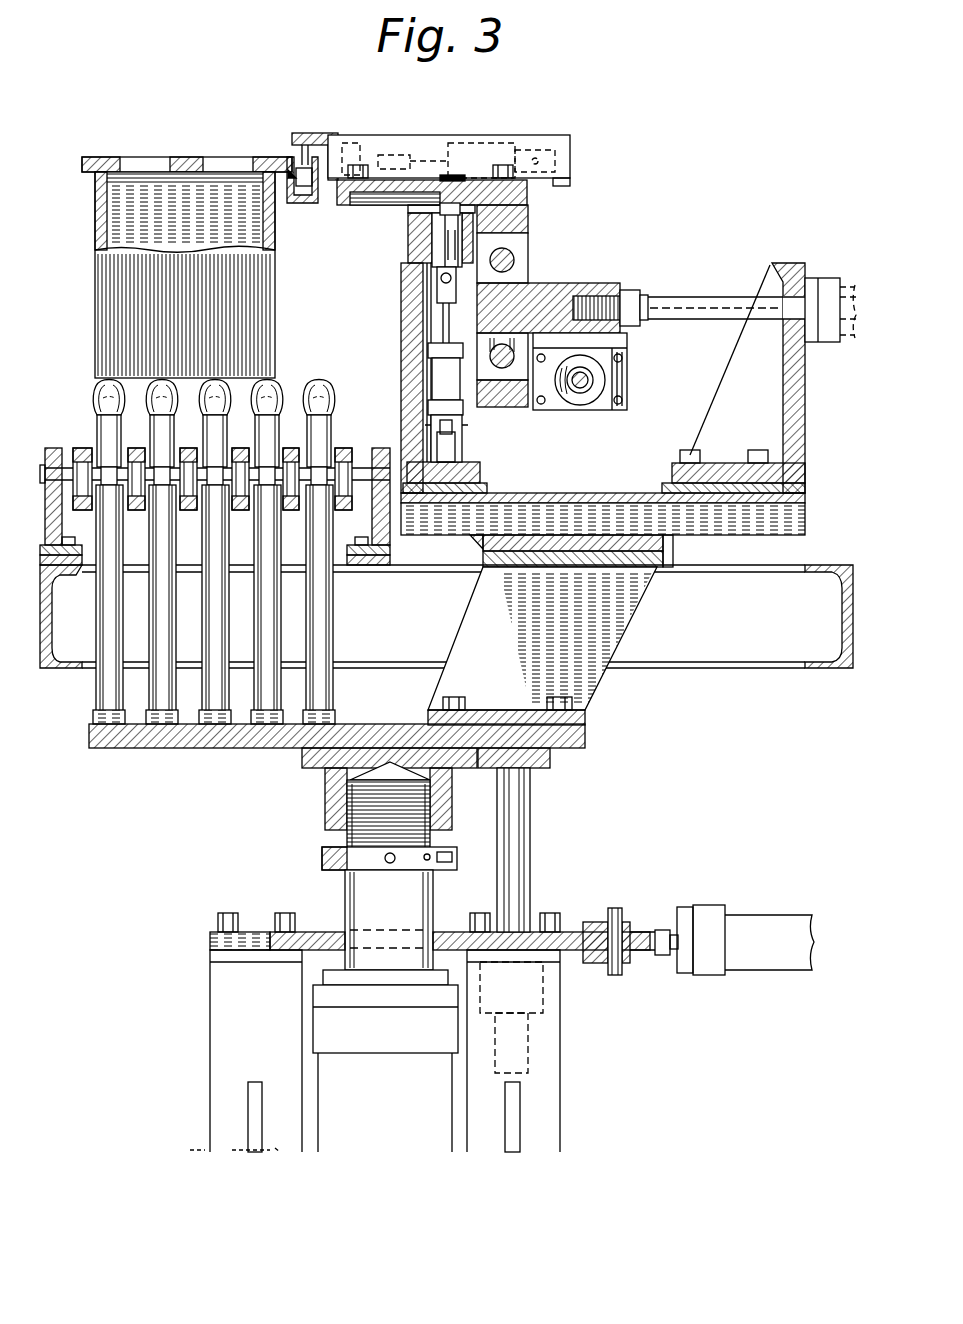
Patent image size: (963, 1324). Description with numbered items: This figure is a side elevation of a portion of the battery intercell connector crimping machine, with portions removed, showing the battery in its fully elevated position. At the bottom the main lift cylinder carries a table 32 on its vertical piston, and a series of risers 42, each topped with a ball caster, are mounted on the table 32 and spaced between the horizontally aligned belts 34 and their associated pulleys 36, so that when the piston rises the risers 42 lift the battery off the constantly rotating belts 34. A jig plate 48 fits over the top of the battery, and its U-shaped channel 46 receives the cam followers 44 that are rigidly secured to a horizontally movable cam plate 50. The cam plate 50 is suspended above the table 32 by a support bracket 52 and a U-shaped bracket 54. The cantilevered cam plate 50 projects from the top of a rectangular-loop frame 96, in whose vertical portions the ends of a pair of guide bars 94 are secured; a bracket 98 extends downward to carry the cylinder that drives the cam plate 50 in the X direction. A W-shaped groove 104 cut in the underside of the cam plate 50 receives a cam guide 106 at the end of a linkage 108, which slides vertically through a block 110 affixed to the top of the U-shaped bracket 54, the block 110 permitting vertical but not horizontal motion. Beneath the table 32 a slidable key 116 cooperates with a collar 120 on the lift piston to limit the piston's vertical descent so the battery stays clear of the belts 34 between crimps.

The table 32 is at (196, 749).
The belts 34 is at (85, 450).
The pulleys 36 is at (358, 460).
The risers 42 is at (278, 386).
The cam followers 44 is at (290, 150).
The U-shaped channel 46 is at (300, 204).
The jig plate 48 is at (200, 170).
The cam plate 50 is at (338, 205).
The support bracket 52 is at (592, 682).
The U-shaped bracket 54 is at (401, 390).
The guide bars 94 is at (512, 259).
The frame 96 is at (527, 218).
The bracket 98 is at (622, 392).
The groove 104 is at (393, 203).
The cam guide 106 is at (440, 213).
The linkage 108 is at (432, 292).
The block 110 is at (432, 268).
The key 116 is at (563, 934).
The collar 120 is at (455, 858).